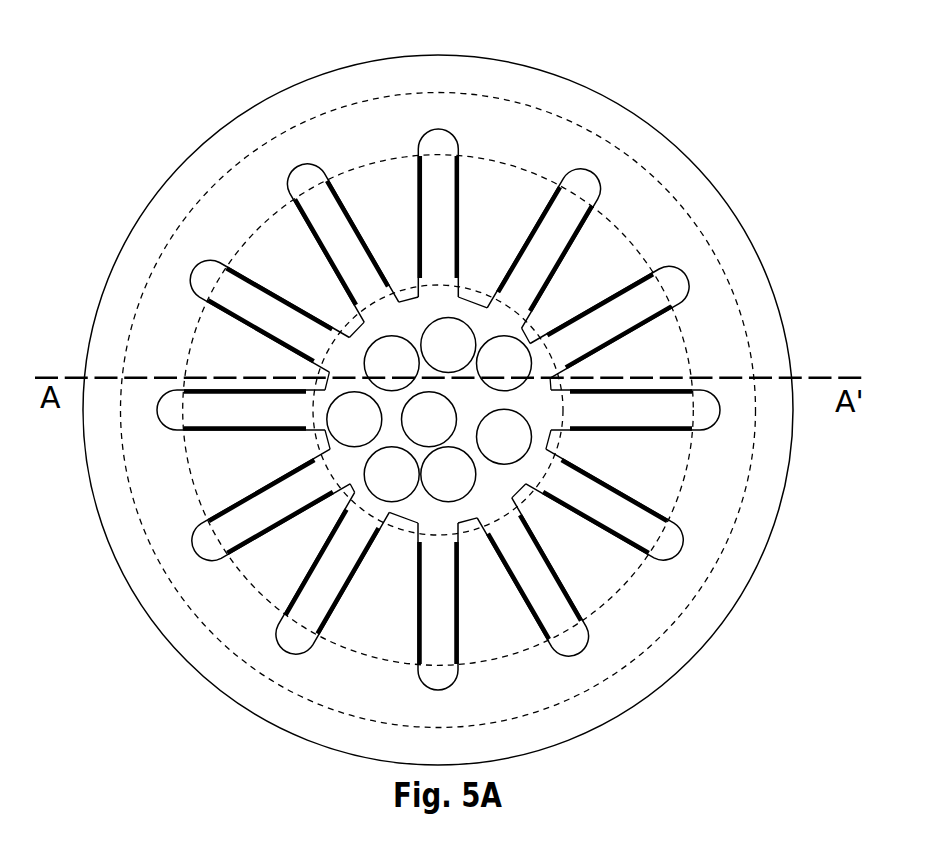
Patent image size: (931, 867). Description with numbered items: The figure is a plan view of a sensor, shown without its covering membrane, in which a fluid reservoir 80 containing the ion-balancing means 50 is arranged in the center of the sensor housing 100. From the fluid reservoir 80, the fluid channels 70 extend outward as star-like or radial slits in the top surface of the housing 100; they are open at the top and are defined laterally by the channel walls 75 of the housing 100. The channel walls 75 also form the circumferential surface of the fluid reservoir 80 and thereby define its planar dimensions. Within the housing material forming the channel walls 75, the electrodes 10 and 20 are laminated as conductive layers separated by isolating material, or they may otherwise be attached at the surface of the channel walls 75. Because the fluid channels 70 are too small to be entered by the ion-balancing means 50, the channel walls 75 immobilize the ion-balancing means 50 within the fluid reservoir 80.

The electrode 10 is at (350, 313).
The second electrode 20 is at (268, 287).
The ion-balancing means 50 is at (497, 352).
The fluid channels 70 is at (697, 410).
The channel walls 75 is at (650, 353).
The fluid reservoir 80 is at (405, 315).
The sensor housing 100 is at (722, 628).